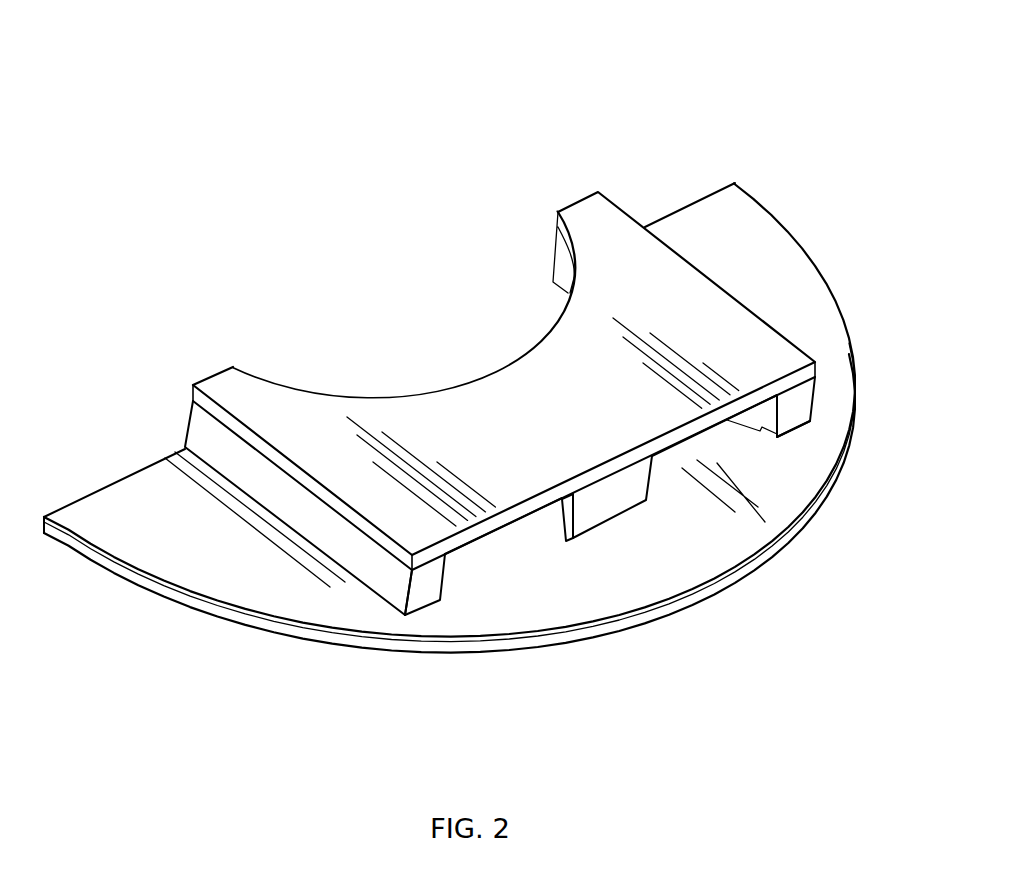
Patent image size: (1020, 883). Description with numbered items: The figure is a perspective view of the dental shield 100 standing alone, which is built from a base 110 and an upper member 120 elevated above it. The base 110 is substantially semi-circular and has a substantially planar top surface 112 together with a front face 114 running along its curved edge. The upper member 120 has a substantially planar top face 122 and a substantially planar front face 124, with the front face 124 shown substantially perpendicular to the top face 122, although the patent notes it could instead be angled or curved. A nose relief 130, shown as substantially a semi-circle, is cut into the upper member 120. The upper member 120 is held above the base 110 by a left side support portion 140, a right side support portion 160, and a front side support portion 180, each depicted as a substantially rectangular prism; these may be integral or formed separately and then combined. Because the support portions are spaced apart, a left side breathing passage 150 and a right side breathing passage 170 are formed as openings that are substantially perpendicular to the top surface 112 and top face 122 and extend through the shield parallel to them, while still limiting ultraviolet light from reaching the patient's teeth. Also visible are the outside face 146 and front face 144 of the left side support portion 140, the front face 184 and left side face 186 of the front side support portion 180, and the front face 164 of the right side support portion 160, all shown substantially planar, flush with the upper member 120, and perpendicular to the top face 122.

The shield 100 is at (354, 130).
The base 110 is at (434, 418).
The top surface 112 is at (207, 559).
The front face 114 is at (118, 572).
The upper member 120 is at (504, 381).
The top face 122 is at (560, 441).
The front face 124 is at (453, 540).
The nose relief 130 is at (490, 368).
The left side support portion 140 is at (366, 548).
The front face 144 is at (428, 592).
The outside face 146 is at (402, 592).
The left side breathing passage 150 is at (516, 545).
The right side support portion 160 is at (843, 423).
The front face 164 is at (792, 417).
The right side breathing passage 170 is at (722, 452).
The front side support portion 180 is at (645, 525).
The front face 184 is at (603, 503).
The left side face 186 is at (565, 522).